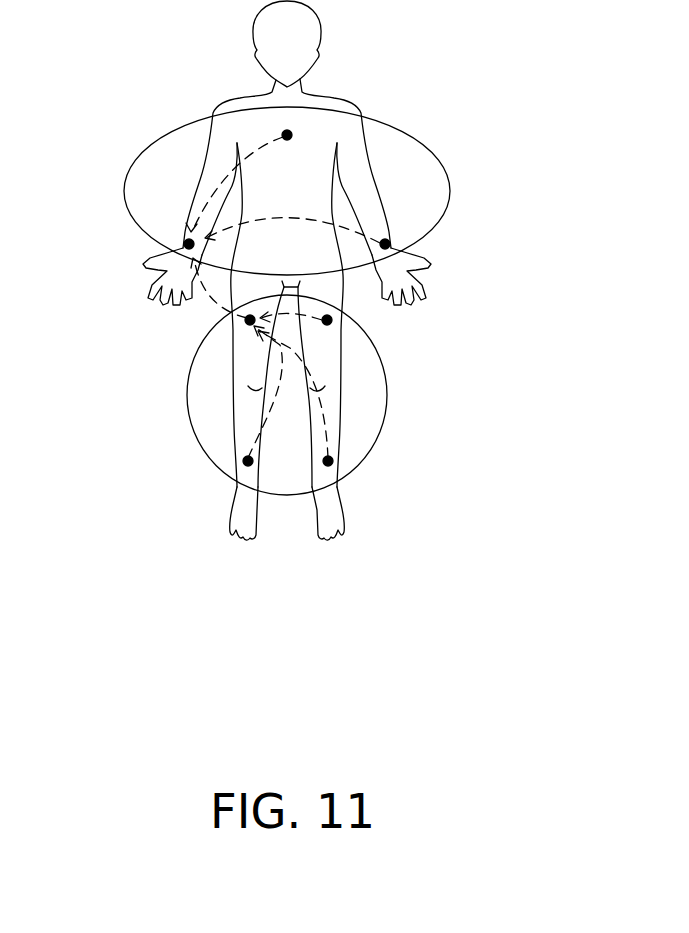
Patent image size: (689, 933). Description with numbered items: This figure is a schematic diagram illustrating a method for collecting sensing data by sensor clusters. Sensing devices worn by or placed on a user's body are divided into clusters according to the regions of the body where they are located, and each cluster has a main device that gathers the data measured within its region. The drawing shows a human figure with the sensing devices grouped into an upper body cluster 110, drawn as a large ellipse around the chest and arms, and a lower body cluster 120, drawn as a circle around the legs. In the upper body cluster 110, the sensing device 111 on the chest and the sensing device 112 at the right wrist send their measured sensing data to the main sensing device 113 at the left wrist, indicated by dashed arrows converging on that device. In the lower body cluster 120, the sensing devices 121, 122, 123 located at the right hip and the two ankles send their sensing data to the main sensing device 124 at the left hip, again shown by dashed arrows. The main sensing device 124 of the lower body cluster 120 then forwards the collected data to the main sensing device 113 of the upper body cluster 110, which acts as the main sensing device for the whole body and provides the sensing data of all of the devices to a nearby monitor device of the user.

The upper body cluster 110 is at (420, 142).
The sensing device 111 is at (291, 132).
The sensing device 112 is at (390, 244).
The main sensing device 113 is at (185, 242).
The lower body cluster 120 is at (388, 407).
The sensing device 121 is at (333, 321).
The sensing device 122 is at (334, 462).
The sensing device 123 is at (243, 461).
The main sensing device 124 is at (244, 320).